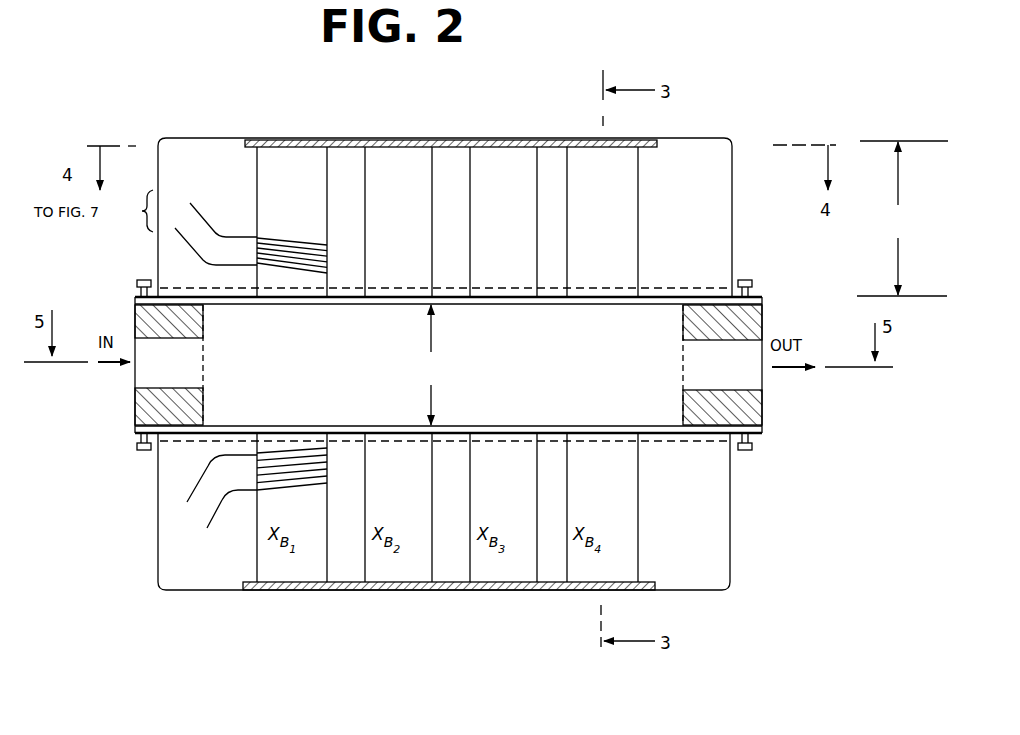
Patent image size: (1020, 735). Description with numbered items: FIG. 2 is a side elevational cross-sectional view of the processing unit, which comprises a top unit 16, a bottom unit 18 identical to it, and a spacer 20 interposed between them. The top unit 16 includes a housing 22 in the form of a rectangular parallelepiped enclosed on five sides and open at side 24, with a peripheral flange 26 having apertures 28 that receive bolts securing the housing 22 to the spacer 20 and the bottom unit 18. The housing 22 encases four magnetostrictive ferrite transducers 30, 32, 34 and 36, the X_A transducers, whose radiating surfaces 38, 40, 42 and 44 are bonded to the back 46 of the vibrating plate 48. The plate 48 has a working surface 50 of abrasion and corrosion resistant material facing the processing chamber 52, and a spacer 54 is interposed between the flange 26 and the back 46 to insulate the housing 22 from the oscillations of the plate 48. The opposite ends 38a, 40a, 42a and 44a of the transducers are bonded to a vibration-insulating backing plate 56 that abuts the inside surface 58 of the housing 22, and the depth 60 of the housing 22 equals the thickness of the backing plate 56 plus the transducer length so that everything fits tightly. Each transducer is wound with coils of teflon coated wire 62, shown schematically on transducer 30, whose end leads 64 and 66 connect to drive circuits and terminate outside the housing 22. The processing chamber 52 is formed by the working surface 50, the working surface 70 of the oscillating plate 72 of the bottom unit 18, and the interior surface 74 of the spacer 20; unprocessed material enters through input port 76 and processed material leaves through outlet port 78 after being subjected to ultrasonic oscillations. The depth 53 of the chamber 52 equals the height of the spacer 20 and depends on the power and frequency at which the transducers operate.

The top unit 16 is at (478, 199).
The bottom unit 18 is at (737, 510).
The spacer 20 is at (441, 365).
The housing 22 is at (700, 138).
The open side 24 is at (651, 278).
The peripheral flange 26 is at (755, 290).
The apertures 28 is at (463, 350).
The transducer 30 is at (304, 172).
The transducer 32 is at (408, 172).
The transducer 34 is at (513, 172).
The transducer 36 is at (608, 172).
The radiating surface 38 is at (305, 297).
The transducer end 38a is at (305, 146).
The radiating surface 40 is at (410, 292).
The transducer end 40a is at (400, 146).
The radiating surface 42 is at (510, 292).
The transducer end 42a is at (490, 146).
The radiating surface 44 is at (612, 292).
The transducer end 44a is at (582, 146).
The back of plate 46 is at (553, 290).
The vibrating plate 48 is at (448, 322).
The working surface 50 is at (466, 318).
The processing chamber 52 is at (316, 376).
The depth of processing chamber 53 is at (430, 365).
The spacer 54 is at (697, 287).
The backing plate 56 is at (451, 104).
The inside surface 58 is at (211, 140).
The depth of housing 60 is at (902, 218).
The wire 62 is at (322, 245).
The end lead 64 is at (214, 265).
The end lead 66 is at (222, 233).
The working surface 70 is at (505, 380).
The oscillating plate 72 is at (606, 426).
The interior surface 74 is at (205, 326).
The input port 76 is at (135, 375).
The outlet port 78 is at (762, 375).